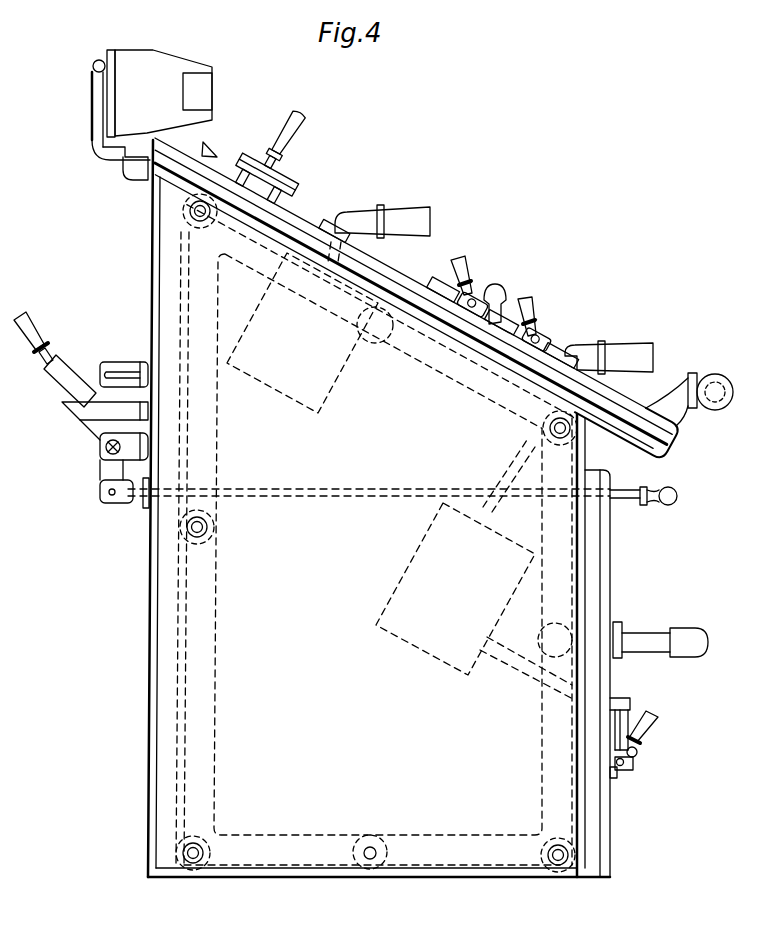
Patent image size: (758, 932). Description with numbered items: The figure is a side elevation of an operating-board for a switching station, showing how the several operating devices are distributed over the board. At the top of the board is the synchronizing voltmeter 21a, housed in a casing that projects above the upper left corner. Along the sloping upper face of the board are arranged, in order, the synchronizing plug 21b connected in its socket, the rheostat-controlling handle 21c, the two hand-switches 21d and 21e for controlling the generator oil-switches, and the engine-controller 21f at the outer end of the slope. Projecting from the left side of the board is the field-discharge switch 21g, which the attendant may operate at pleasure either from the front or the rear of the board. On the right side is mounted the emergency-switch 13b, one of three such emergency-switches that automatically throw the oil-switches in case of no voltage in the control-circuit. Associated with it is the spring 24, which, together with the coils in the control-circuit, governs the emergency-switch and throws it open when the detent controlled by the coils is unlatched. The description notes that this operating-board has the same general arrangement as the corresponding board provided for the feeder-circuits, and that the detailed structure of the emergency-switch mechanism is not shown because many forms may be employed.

The synchronizing voltmeter 21a is at (152, 115).
The synchronizing plug 21b is at (238, 168).
The rheostat-controlling handle 21c is at (361, 218).
The hand-switch 21d is at (448, 265).
The hand-switch 21e is at (528, 303).
The engine-controller 21f is at (612, 348).
The field-discharge switch 21g is at (108, 402).
The emergency-switch 13b is at (653, 726).
The spring 24 is at (633, 768).